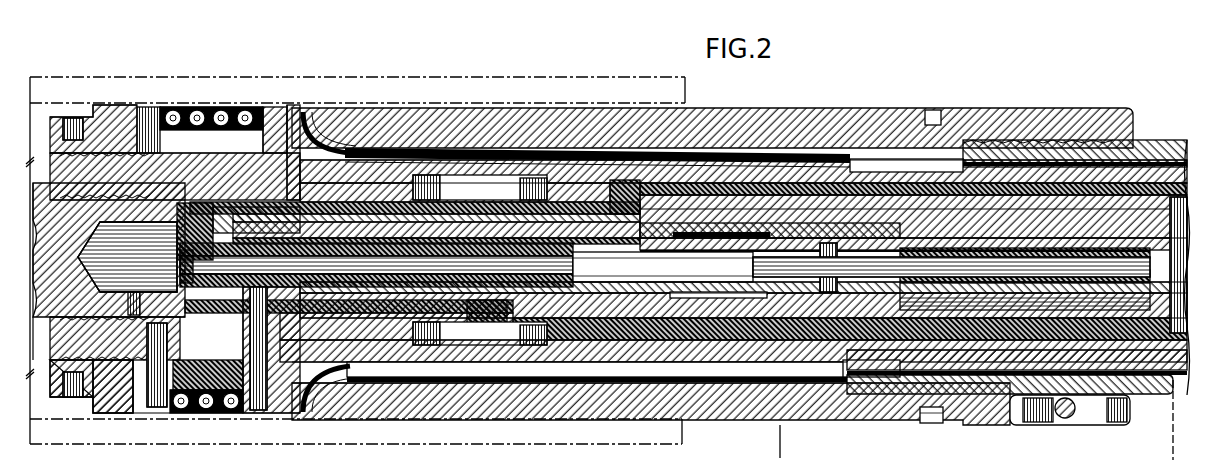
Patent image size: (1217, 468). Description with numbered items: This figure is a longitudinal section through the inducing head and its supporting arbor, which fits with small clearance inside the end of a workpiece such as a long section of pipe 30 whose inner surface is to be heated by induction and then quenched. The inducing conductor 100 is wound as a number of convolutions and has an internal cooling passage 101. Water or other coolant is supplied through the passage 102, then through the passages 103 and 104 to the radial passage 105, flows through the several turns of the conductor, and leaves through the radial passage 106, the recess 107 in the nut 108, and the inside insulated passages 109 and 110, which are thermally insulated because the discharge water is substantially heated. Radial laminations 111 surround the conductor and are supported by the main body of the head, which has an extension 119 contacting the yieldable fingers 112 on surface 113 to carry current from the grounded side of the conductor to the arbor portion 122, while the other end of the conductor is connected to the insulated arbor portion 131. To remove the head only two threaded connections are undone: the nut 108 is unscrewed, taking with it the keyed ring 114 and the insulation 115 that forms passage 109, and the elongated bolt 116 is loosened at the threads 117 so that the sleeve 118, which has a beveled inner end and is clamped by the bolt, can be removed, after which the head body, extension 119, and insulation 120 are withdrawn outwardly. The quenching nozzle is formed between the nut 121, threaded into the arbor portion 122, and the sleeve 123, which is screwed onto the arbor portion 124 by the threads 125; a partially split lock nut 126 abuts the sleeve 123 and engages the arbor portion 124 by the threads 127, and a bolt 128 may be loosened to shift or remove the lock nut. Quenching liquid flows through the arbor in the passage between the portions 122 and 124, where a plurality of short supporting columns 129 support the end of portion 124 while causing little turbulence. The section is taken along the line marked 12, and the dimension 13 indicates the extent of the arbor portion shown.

The section line 12 is at (935, 440).
The length dimension 13 is at (1173, 446).
The pipe 30 is at (440, 440).
The inducing conductor 100 is at (232, 412).
The internal cooling passage 101 is at (200, 412).
The passage 102 is at (1145, 297).
The passage 103 is at (772, 360).
The passage 104 is at (642, 383).
The radial passage 105 is at (292, 412).
The radial passage 106 is at (152, 410).
The recess 107 is at (127, 257).
The nut 108 is at (34, 322).
The insulated passage 109 is at (535, 300).
The insulated passage 110 is at (1147, 272).
The radial laminations 111 is at (276, 130).
The yieldable fingers 112 is at (480, 200).
The surface 113 is at (447, 193).
The ring 114 is at (190, 230).
The insulation 115 is at (228, 225).
The elongated bolt 116 is at (262, 192).
The threads 117 is at (773, 313).
The sleeve 118 is at (645, 240).
The extension 119 is at (380, 197).
The insulation 120 is at (362, 210).
The nut 121 is at (330, 368).
The arbor portion 122 is at (585, 340).
The sleeve 123 is at (500, 412).
The arbor portion 124 is at (952, 148).
The threads 125 is at (865, 385).
The lock nut 126 is at (997, 405).
The threads 127 is at (1030, 405).
The bolt 128 is at (1085, 410).
The supporting columns 129 is at (880, 165).
The insulated arbor portion 131 is at (1160, 212).